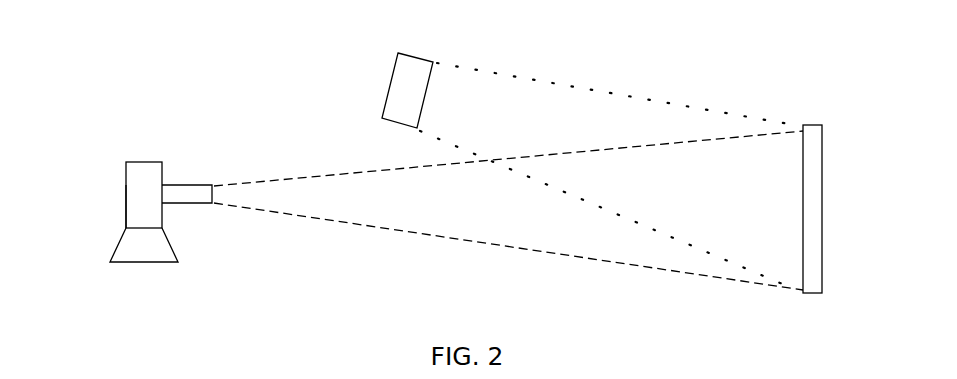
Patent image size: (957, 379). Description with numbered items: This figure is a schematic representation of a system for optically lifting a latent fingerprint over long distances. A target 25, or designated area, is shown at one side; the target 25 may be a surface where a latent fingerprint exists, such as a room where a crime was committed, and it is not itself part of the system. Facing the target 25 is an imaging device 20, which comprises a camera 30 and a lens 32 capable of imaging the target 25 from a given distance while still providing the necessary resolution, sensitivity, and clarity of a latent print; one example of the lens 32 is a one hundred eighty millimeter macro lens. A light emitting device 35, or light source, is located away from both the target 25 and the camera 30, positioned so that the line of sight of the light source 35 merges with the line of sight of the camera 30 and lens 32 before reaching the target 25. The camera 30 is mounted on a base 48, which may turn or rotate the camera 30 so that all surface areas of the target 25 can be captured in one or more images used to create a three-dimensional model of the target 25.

The imaging device 20 is at (143, 162).
The target 25 is at (810, 123).
The camera 30 is at (127, 185).
The lens 32 is at (195, 205).
The light emitting device 35 is at (415, 55).
The base 48 is at (145, 262).